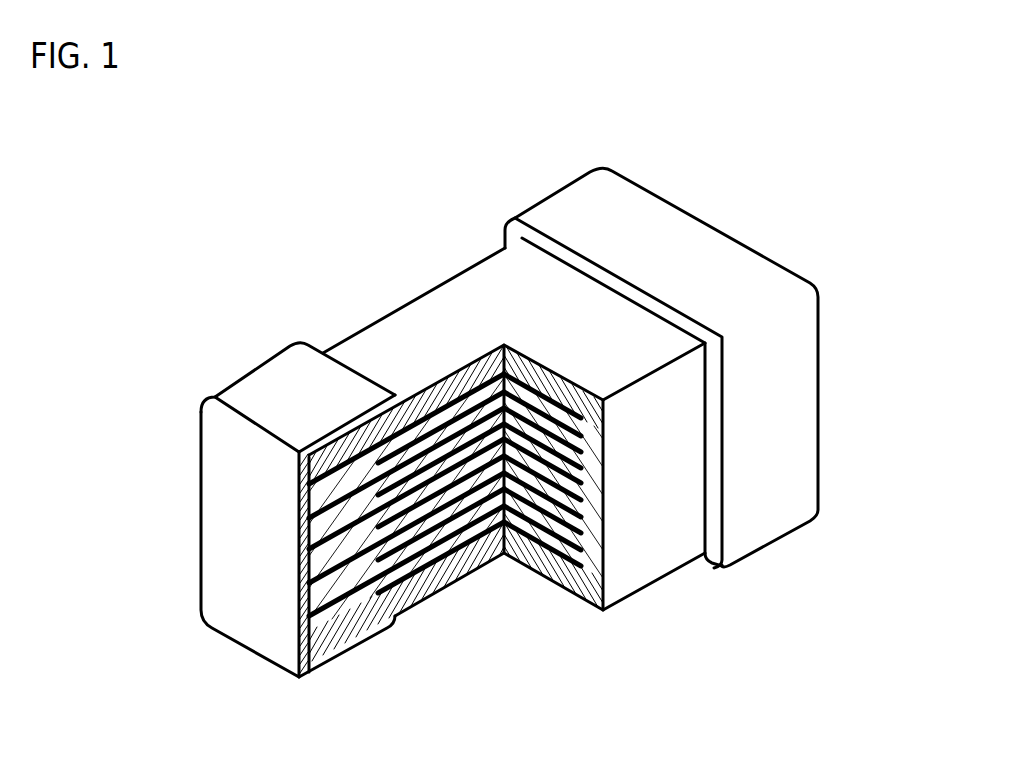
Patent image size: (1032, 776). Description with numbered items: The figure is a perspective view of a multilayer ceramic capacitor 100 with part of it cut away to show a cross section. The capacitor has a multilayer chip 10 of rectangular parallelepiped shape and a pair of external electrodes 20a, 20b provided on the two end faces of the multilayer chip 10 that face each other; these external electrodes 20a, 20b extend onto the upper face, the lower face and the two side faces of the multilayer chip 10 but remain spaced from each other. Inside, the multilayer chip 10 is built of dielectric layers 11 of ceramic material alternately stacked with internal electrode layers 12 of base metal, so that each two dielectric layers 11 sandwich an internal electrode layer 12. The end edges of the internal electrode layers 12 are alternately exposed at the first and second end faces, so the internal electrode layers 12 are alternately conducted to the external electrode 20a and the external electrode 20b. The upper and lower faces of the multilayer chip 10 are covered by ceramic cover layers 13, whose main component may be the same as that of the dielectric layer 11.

The multilayer ceramic capacitor 100 is at (918, 98).
The multilayer chip 10 is at (341, 338).
The dielectric layer 11 is at (467, 515).
The internal electrode layer 12 is at (500, 556).
The cover layer 13 is at (473, 283).
The external electrode 20a is at (226, 384).
The external electrode 20b is at (562, 210).